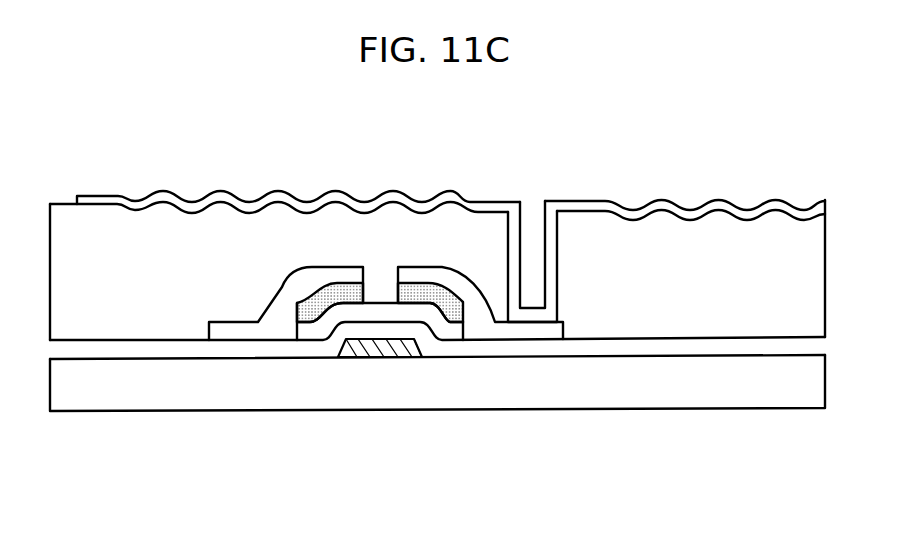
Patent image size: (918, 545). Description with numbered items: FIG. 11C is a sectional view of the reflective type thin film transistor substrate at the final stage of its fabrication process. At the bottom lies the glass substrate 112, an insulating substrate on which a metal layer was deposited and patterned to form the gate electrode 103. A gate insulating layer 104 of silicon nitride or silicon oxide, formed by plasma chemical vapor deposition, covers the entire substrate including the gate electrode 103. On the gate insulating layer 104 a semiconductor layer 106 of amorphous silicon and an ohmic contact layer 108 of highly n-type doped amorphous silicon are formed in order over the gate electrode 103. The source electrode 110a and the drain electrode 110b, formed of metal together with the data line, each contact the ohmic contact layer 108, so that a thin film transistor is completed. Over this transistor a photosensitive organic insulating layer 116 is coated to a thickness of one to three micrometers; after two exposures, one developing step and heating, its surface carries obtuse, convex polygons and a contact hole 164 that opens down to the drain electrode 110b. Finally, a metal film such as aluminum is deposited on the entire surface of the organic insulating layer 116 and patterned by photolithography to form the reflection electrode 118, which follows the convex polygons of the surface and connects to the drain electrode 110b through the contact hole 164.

The gate electrode 103 is at (367, 357).
The gate insulating layer 104 is at (632, 347).
The semiconductor layer 106 is at (453, 323).
The ohmic contact layer 108 is at (447, 300).
The source electrode 110a is at (295, 290).
The drain electrode 110b is at (408, 273).
The glass substrate 112 is at (742, 378).
The organic insulating layer 116 is at (748, 245).
The reflection electrode 118 is at (668, 200).
The contact hole 164 is at (535, 191).